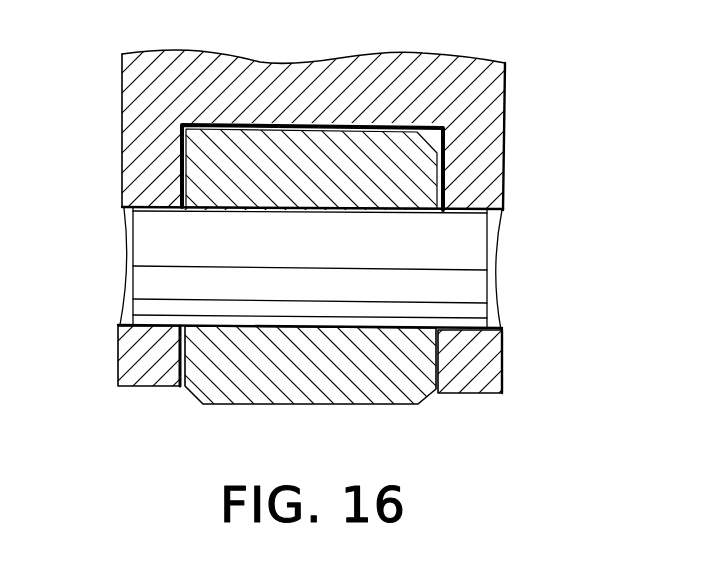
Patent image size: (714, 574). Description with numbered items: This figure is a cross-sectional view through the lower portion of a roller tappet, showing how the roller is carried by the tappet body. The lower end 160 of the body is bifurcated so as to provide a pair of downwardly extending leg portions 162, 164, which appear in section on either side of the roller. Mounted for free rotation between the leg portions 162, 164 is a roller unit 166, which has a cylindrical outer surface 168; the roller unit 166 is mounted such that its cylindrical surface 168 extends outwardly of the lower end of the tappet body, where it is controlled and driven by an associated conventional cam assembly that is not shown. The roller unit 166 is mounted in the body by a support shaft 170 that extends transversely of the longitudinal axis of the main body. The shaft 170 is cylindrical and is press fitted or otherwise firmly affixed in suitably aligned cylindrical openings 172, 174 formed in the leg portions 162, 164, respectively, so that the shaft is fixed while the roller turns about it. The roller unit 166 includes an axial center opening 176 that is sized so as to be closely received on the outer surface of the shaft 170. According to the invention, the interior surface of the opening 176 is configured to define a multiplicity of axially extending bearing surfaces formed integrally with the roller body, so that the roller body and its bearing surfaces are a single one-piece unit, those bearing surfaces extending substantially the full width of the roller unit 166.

The lower end 160 is at (505, 99).
The leg portion 162 is at (118, 348).
The leg portion 164 is at (502, 355).
The roller unit 166 is at (322, 414).
The cylindrical outer surface 168 is at (277, 405).
The support shaft 170 is at (453, 283).
The cylindrical opening 172 is at (123, 207).
The cylindrical opening 174 is at (475, 210).
The axial center opening 176 is at (247, 209).